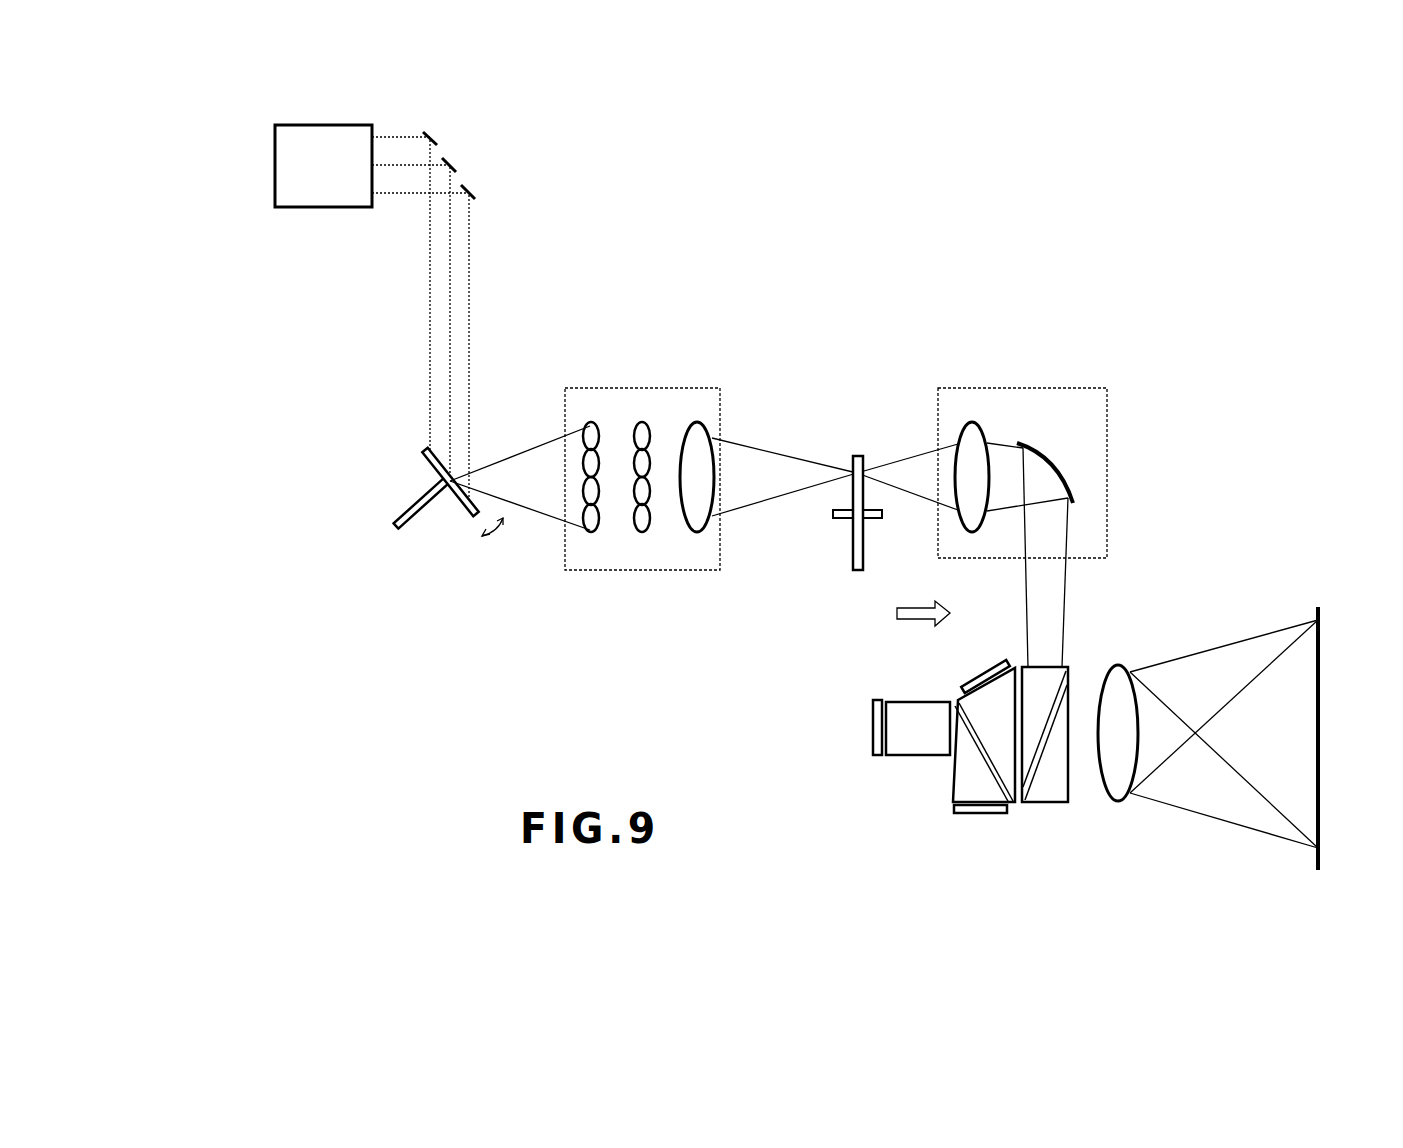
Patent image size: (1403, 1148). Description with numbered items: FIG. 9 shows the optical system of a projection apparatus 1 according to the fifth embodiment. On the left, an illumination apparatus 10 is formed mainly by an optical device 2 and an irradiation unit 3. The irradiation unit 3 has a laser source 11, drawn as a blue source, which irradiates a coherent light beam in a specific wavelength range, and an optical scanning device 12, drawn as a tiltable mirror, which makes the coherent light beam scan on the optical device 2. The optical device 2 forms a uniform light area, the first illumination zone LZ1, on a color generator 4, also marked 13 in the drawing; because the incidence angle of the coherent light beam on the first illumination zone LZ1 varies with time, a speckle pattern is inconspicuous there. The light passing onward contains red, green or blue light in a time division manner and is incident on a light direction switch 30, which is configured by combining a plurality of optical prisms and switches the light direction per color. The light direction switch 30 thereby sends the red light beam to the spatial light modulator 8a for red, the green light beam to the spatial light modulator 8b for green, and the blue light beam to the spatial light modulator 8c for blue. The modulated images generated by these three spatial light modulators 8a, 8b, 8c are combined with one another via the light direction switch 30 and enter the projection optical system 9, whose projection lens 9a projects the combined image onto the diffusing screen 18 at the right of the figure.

The projection apparatus 1 is at (383, 693).
The optical device 2 is at (636, 388).
The irradiation unit 3 is at (350, 288).
The color generator 4 is at (857, 572).
The dimmer / aperture plate 13 is at (857, 513).
The first illumination zone LZ1 is at (855, 468).
The spatial light modulator for red 8a is at (970, 680).
The spatial light modulator for green 8b is at (876, 758).
The spatial light modulator for blue 8c is at (977, 815).
The projection optical system 9 is at (1183, 672).
The projection lens 9a is at (1118, 686).
The illumination apparatus 10 is at (507, 212).
The laser source 11 is at (302, 124).
The optical scanning device 12 is at (438, 471).
The diffusing screen 18 is at (1313, 858).
The light direction switch 30 is at (1040, 803).